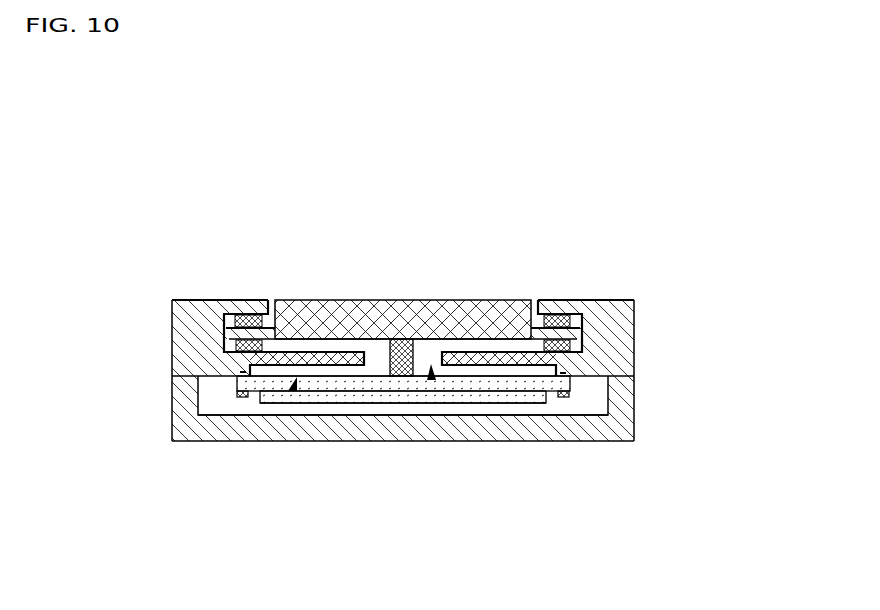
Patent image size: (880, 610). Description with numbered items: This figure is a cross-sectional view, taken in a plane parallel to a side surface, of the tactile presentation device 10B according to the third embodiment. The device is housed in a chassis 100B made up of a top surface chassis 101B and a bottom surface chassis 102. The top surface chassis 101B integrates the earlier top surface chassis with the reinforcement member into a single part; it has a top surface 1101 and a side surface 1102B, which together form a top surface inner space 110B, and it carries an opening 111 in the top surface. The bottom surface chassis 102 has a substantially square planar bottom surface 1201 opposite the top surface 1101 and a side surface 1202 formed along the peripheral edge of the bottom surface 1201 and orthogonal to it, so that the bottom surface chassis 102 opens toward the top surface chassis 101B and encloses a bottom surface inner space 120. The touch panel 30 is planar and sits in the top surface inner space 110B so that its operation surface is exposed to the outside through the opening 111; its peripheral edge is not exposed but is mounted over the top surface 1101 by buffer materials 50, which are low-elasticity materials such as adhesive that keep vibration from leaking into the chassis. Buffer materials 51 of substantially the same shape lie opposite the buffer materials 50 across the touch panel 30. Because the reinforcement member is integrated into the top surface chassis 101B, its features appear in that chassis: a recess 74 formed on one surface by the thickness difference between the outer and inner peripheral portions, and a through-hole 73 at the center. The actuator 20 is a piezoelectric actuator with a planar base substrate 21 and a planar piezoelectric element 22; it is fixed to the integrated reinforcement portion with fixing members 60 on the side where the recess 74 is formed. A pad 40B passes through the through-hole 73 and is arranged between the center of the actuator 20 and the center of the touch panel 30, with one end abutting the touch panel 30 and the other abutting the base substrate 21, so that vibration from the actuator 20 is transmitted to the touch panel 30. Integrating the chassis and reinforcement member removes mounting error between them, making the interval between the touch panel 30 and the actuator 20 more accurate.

The tactile presentation device 10B is at (668, 185).
The chassis 100B is at (689, 240).
The top surface chassis 101B is at (662, 276).
The top surface 1101 is at (608, 288).
The side surface 1102B is at (636, 327).
The bottom surface chassis 102 is at (671, 446).
The bottom surface 1201 is at (603, 441).
The side surface 1202 is at (618, 424).
The actuator 20 is at (364, 494).
The base substrate 21 is at (371, 404).
The piezoelectric element 22 is at (337, 404).
The fixing member 60 is at (242, 398).
The through-hole 73 is at (432, 381).
The recess 74 is at (291, 392).
The top surface inner space 110B is at (324, 330).
The opening 111 is at (525, 287).
The bottom surface inner space 120 is at (514, 427).
The touch panel 30 is at (393, 299).
The pad 40B is at (418, 338).
The buffer material 50 is at (248, 313).
The buffer material 51 is at (213, 299).